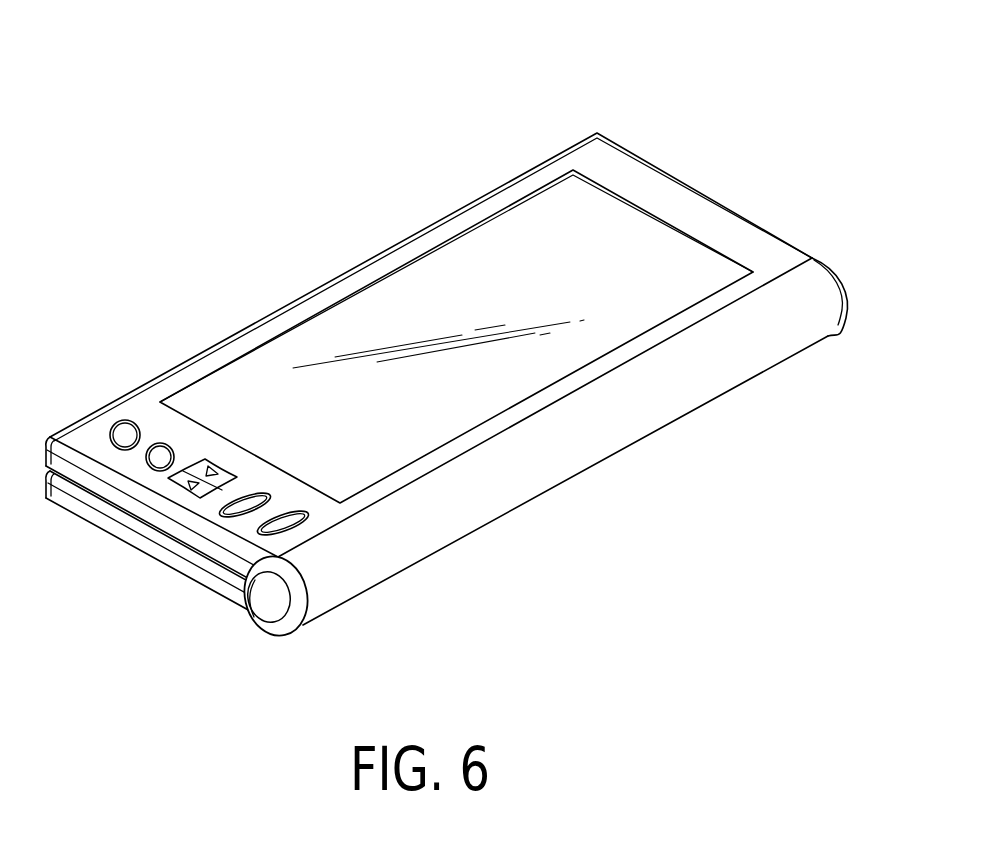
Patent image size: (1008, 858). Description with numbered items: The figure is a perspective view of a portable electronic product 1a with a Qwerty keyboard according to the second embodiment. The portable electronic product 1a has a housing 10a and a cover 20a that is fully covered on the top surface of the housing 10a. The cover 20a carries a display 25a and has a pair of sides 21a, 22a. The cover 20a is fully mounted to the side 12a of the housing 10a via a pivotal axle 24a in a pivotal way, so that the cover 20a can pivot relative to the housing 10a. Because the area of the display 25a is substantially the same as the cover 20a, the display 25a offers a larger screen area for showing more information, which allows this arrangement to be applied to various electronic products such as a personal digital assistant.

The portable electronic product 1a is at (829, 130).
The housing 10a is at (141, 554).
The side 12a is at (477, 530).
The cover 20a is at (447, 361).
The side 21a is at (393, 246).
The side 22a is at (613, 373).
The pivotal axle 24a is at (268, 604).
The display 25a is at (530, 225).